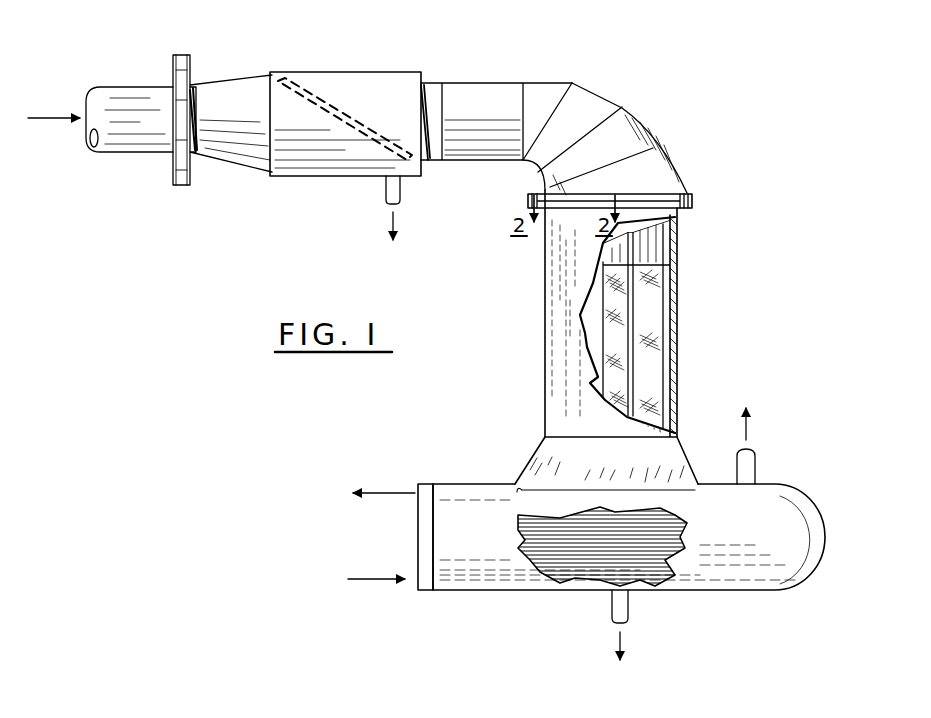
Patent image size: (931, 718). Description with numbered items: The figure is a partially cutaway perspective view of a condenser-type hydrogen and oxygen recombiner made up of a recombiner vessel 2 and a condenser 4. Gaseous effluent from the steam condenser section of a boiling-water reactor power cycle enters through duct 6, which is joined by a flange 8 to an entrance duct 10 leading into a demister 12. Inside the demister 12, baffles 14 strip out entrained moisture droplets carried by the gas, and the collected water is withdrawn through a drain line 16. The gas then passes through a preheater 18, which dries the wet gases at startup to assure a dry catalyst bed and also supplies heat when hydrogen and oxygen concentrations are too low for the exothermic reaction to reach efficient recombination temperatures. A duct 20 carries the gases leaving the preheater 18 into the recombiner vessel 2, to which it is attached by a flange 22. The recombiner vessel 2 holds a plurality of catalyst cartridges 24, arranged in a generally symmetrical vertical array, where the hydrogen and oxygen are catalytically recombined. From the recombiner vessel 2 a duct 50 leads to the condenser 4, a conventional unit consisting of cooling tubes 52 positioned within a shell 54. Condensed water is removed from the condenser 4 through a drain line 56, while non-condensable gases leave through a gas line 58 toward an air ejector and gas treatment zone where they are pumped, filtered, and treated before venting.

The recombiner vessel 2 is at (563, 317).
The condenser 4 is at (465, 573).
The duct 6 is at (125, 92).
The flange 8 is at (180, 55).
The entrance duct 10 is at (225, 90).
The demister 12 is at (296, 147).
The baffles 14 is at (323, 97).
The drain line 16 is at (405, 195).
The preheater 18 is at (467, 95).
The duct 20 is at (620, 118).
The flange 22 is at (688, 195).
The catalyst cartridges 24 is at (653, 302).
The duct 50 is at (545, 452).
The cooling tubes 52 is at (565, 553).
The shell 54 is at (447, 510).
The drain line 56 is at (632, 608).
The gas line 58 is at (758, 456).